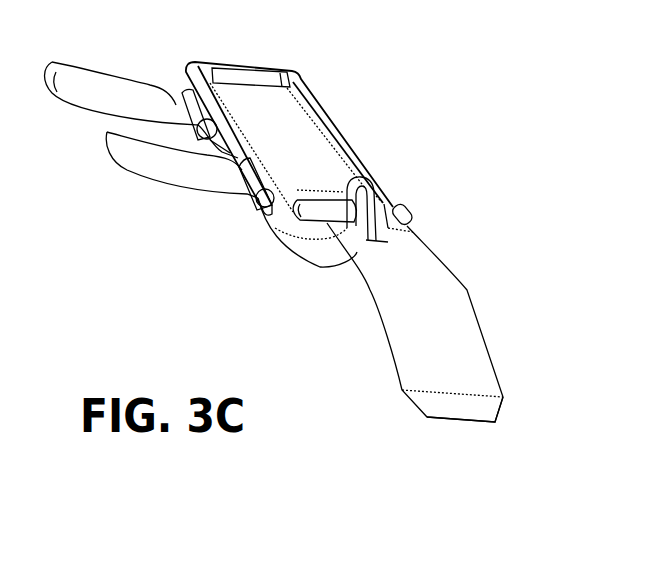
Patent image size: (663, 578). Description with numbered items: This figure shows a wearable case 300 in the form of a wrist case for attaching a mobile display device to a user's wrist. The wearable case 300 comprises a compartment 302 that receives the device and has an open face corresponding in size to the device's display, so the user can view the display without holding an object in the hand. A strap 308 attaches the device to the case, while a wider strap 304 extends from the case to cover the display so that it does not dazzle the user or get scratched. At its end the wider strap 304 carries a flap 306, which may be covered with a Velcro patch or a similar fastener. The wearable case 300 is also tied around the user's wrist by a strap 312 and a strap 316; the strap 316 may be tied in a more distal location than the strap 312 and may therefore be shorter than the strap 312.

The wearable case 300 is at (359, 59).
The compartment 302 is at (345, 130).
The wider strap 304 is at (462, 284).
The flap 306 is at (456, 412).
The strap 308 is at (410, 212).
The strap 312 is at (118, 84).
The strap 316 is at (178, 178).